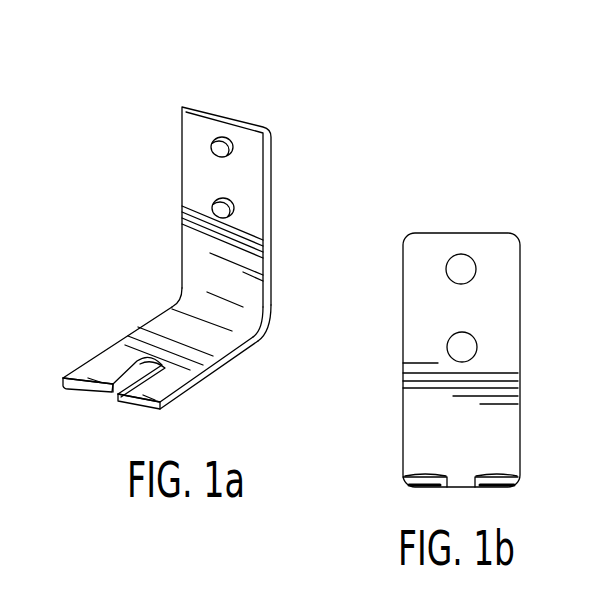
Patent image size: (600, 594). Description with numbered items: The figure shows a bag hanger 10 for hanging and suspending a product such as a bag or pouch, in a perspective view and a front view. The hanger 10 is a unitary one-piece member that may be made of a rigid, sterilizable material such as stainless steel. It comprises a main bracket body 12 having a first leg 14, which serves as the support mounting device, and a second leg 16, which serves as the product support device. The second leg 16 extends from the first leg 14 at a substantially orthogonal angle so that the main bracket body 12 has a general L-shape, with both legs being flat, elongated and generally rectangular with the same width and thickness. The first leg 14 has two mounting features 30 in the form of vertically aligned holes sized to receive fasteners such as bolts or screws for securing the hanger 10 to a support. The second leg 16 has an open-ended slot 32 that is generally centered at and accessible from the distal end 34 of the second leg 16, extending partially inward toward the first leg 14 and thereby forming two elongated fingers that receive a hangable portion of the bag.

In FIG. 1A, the hanger 10 is at (187, 274).
In FIG. 1B, the hanger 10 is at (472, 331).
In FIG. 1A, the main bracket body 12 is at (190, 291).
In FIG. 1A, the first leg 14 is at (252, 260).
In FIG. 1B, the first leg 14 is at (512, 258).
In FIG. 1A, the second leg 16 is at (173, 332).
In FIG. 1A, the mounting features 30 is at (233, 157).
In FIG. 1B, the mounting features 30 is at (447, 278).
In FIG. 1A, the open-ended slot 32 is at (113, 392).
In FIG. 1A, the distal end 34 is at (136, 404).